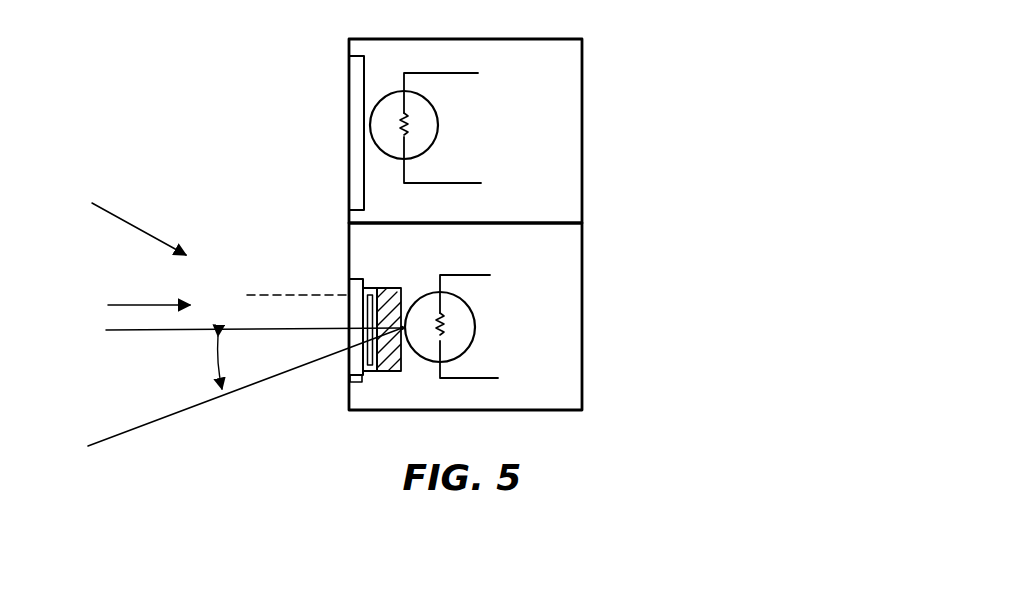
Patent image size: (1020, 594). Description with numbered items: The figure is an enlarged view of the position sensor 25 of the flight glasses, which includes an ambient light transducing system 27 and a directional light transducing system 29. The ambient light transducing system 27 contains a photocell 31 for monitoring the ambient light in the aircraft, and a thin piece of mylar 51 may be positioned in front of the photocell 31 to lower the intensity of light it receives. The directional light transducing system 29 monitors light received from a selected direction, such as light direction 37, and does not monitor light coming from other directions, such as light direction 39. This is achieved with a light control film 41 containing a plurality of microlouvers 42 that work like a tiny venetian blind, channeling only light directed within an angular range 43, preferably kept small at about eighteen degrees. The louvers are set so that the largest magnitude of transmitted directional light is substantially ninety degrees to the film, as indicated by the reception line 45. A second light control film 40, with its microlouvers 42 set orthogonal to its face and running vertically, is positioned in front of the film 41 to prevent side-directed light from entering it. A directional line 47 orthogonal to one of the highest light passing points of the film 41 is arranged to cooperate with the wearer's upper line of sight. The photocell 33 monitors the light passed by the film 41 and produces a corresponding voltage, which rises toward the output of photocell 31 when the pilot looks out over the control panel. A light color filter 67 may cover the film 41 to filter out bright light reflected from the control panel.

The position sensor 25 is at (558, 224).
The ambient light transducing system 27 is at (583, 130).
The directional light transducing system 29 is at (489, 316).
The photocell 31 is at (439, 127).
The photocell 33 is at (459, 326).
The light direction 37 is at (149, 292).
The light direction 39 is at (139, 229).
The second light control film 40 is at (368, 374).
The light control film 41 is at (397, 374).
The microlouvers 42 is at (370, 293).
The angular range 43 is at (245, 387).
The reception line 45 is at (157, 332).
The directional line 47 is at (277, 294).
The mylar 51 is at (349, 133).
The light color filter 67 is at (350, 382).